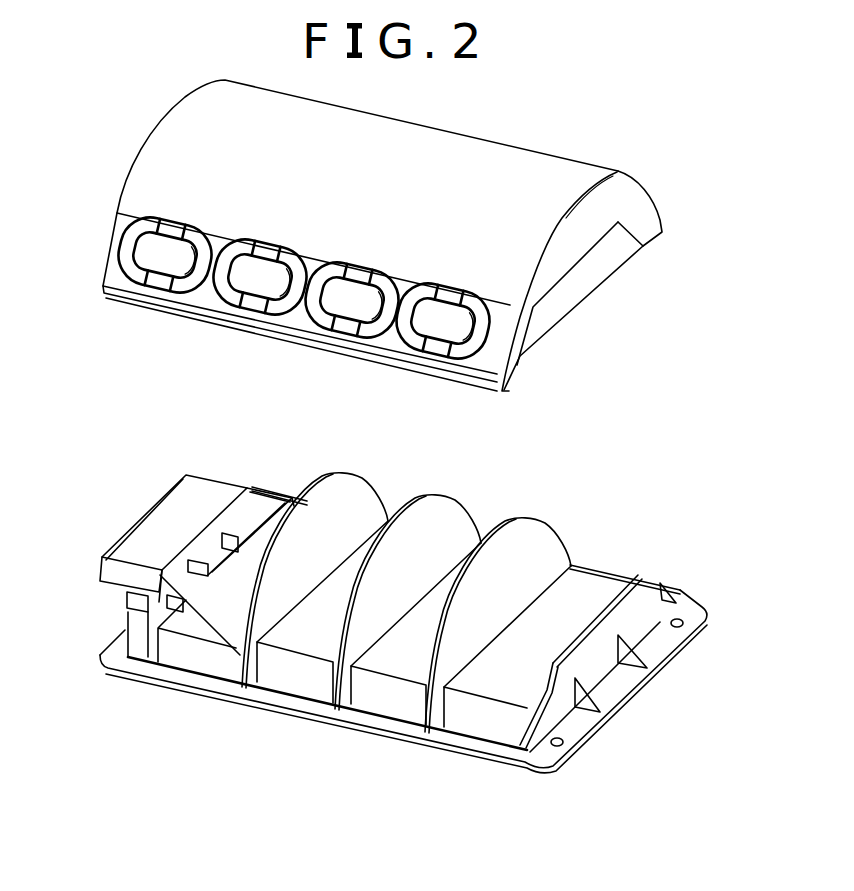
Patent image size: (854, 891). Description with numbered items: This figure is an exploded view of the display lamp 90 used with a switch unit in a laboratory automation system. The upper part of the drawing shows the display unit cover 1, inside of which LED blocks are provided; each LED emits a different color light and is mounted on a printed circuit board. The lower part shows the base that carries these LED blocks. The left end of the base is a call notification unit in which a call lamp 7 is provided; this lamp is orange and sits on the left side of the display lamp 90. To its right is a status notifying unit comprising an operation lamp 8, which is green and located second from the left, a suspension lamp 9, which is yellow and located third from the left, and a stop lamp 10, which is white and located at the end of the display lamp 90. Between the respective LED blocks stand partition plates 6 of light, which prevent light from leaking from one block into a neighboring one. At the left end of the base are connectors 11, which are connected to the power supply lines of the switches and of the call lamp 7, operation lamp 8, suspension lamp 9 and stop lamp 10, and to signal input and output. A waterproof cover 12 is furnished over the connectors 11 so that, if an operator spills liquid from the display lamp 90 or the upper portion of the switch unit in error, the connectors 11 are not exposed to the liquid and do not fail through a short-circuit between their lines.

The display lamp 90 is at (609, 130).
The display unit cover 1 is at (483, 173).
The partition plates 6 is at (335, 522).
The call lamp 7 is at (217, 613).
The operation lamp 8 is at (310, 637).
The suspension lamp 9 is at (402, 660).
The stop lamp 10 is at (490, 683).
The connectors 11 is at (230, 546).
The waterproof cover 12 is at (155, 528).